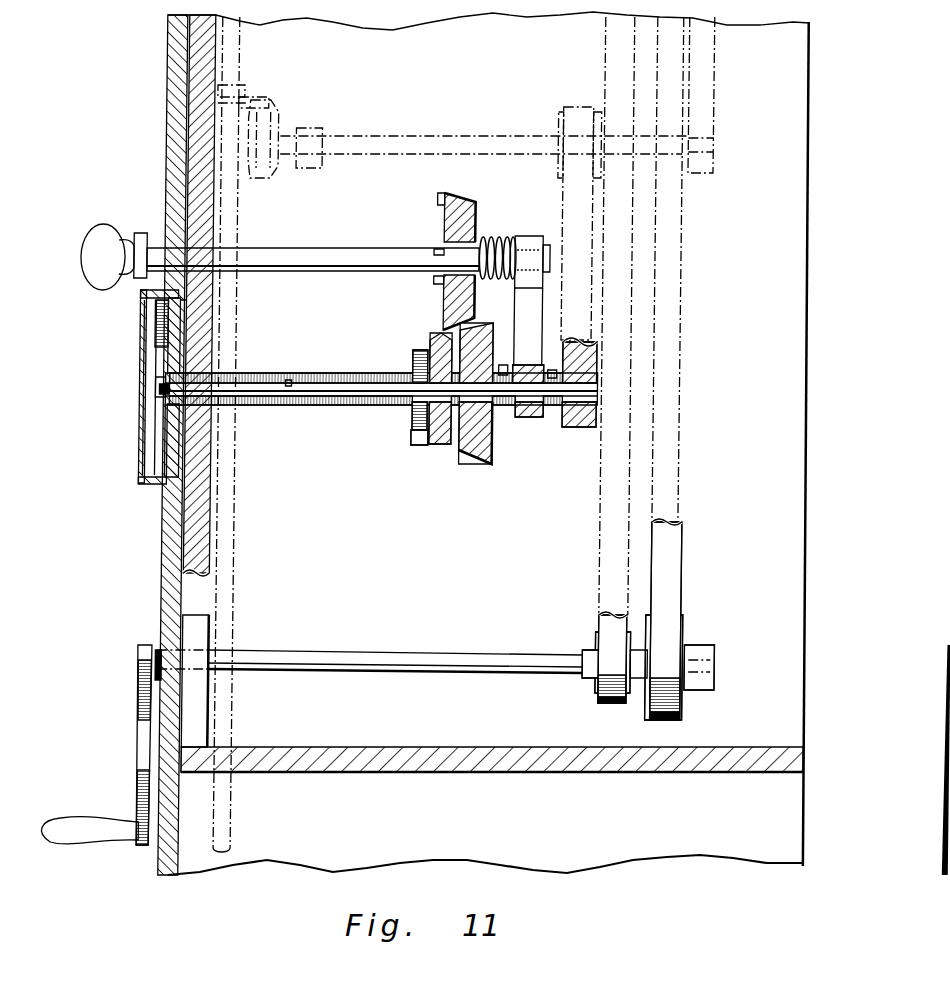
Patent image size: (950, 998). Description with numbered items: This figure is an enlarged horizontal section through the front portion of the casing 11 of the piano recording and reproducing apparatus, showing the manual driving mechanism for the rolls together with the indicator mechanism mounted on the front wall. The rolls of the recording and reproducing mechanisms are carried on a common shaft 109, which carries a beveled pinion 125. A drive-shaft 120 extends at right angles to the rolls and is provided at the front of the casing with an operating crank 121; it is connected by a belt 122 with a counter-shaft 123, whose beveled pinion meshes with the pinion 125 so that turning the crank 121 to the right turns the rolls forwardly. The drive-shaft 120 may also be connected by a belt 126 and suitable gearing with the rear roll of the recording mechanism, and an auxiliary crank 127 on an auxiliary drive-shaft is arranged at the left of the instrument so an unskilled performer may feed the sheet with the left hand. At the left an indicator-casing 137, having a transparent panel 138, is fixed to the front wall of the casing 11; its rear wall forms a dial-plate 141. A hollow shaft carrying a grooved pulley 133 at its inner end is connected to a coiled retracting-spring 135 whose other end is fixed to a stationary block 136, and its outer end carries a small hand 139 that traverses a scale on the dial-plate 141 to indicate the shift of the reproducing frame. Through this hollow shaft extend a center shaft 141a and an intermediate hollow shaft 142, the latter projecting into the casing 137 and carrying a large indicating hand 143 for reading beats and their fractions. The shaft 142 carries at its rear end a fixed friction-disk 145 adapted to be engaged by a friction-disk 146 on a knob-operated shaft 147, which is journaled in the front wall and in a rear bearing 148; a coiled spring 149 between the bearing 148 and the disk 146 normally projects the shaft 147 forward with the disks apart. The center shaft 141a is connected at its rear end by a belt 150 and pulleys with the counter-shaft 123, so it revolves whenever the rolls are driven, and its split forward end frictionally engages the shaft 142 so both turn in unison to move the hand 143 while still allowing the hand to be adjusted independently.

The casing 11 is at (170, 520).
The shaft 109 is at (233, 512).
The drive-shaft 120 is at (445, 651).
The operating crank 121 is at (144, 732).
The belt 122 is at (606, 538).
The counter-shaft 123 is at (458, 140).
The beveled pinion 125 is at (256, 98).
The belt 126 is at (668, 550).
The operating crank 127 is at (268, 170).
The grooved pulley 133 is at (440, 340).
The coiled retracting-spring 135 is at (417, 412).
The stationary block 136 is at (419, 446).
The indicator-casing 137 is at (160, 448).
The transparent panel 138 is at (146, 362).
The small hand 139 is at (172, 430).
The dial-plate 141 is at (182, 322).
The center shaft 141a is at (292, 392).
The intermediate hollow shaft 142 is at (278, 370).
The large indicating hand 143 is at (159, 322).
The friction-disk 145 is at (486, 436).
The friction-disk 146 is at (448, 198).
The knob-operated shaft 147 is at (380, 248).
The bearing 148 is at (532, 238).
The coiled spring 149 is at (486, 240).
The belt 150 is at (577, 107).